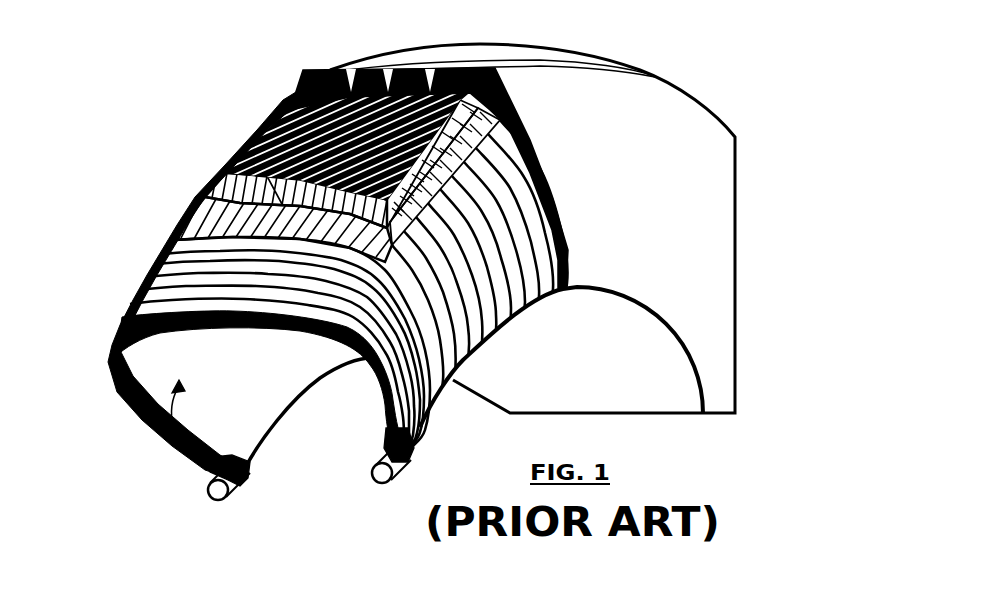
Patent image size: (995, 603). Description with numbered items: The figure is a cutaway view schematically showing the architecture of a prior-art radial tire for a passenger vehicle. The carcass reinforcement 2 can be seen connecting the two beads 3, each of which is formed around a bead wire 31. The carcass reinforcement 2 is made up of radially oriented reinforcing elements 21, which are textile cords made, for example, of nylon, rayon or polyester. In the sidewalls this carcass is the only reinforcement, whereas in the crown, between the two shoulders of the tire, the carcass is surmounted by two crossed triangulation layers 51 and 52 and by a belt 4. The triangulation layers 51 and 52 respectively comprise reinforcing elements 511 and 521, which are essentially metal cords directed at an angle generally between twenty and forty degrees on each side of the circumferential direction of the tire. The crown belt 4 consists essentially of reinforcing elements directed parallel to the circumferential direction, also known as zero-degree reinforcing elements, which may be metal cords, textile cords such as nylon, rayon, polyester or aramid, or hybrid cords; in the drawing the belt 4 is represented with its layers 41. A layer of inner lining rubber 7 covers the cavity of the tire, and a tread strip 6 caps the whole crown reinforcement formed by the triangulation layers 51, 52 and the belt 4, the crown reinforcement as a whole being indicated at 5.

The carcass reinforcement 2 is at (76, 288).
The reinforcing elements 21 is at (183, 272).
The beads 3 is at (351, 445).
The bead wires 31 is at (370, 474).
The belt 4 is at (168, 66).
The belt layer 41 is at (290, 113).
The reinforcing layer 5 is at (67, 88).
The triangulation layer 51 is at (116, 208).
The reinforcing elements 511 is at (207, 198).
The triangulation layer 52 is at (118, 86).
The reinforcing elements 521 is at (247, 157).
The tread strip 6 is at (343, 68).
The inner lining rubber 7 is at (173, 424).